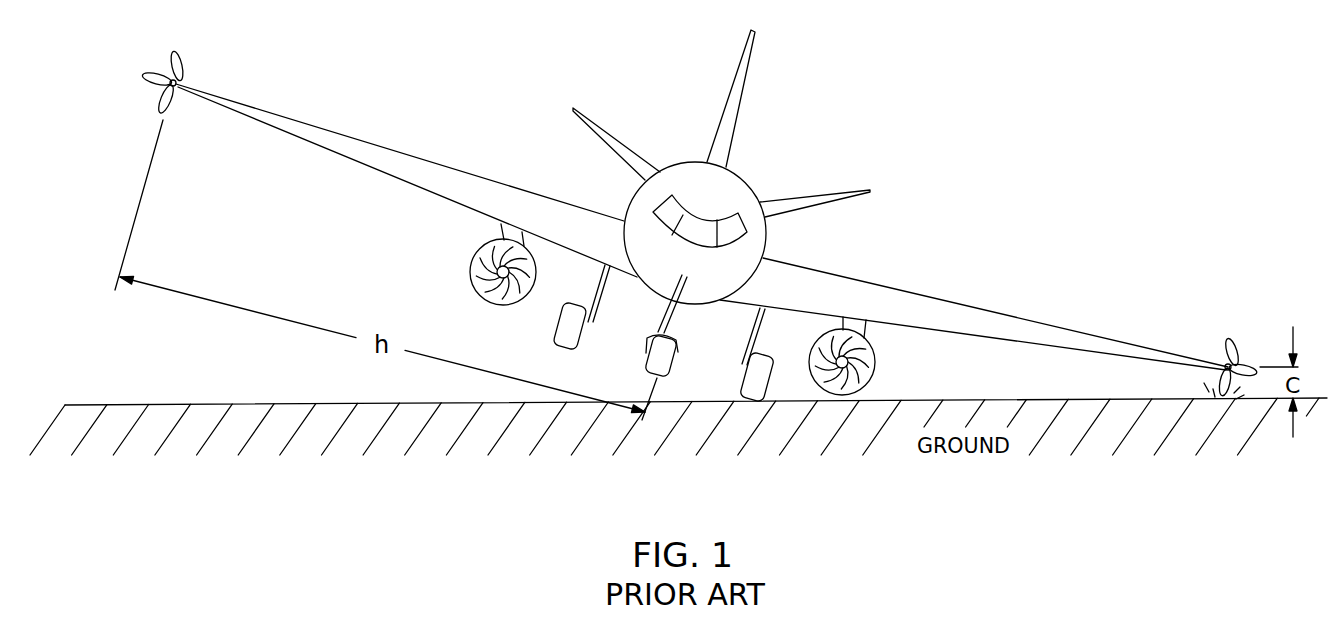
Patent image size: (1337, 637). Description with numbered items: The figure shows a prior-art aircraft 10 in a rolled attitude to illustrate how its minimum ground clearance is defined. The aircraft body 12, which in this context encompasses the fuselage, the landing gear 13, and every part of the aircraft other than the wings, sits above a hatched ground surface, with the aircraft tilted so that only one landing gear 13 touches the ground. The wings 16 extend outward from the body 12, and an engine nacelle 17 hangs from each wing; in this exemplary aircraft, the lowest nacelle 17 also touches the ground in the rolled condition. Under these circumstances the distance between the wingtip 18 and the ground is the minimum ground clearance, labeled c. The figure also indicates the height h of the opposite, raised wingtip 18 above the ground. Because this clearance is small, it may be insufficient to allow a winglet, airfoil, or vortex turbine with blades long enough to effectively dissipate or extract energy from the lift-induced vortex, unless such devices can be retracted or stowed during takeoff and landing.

The aircraft 10 is at (880, 108).
The aircraft body 12 is at (768, 230).
The landing gear 13 is at (762, 352).
The wings 16 is at (418, 160).
The engine nacelle 17 is at (877, 352).
The wingtip 18 is at (1210, 350).